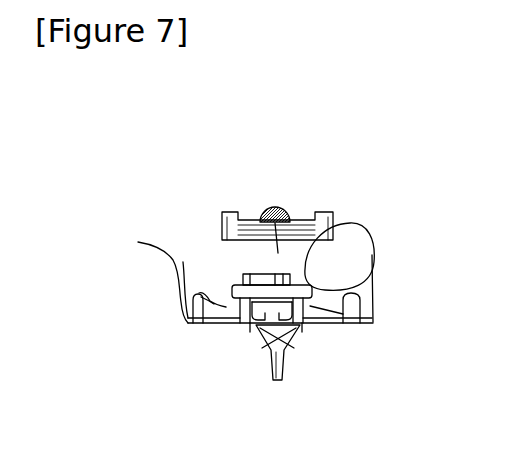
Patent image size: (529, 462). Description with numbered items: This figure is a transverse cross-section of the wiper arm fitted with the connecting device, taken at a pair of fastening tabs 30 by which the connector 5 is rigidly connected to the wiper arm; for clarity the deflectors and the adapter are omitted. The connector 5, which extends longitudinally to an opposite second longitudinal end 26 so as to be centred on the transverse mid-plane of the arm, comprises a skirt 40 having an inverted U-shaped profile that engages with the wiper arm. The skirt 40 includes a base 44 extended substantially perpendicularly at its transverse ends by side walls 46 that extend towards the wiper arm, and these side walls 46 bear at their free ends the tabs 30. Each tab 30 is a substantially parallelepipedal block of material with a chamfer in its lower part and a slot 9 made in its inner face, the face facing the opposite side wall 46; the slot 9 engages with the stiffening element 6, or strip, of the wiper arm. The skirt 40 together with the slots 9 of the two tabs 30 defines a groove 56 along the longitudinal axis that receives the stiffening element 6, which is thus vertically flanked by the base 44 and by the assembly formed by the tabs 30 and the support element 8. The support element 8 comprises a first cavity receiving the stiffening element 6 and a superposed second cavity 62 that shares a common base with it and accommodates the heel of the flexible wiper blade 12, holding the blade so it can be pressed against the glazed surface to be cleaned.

The connector 5 is at (248, 182).
The skirt 40 is at (217, 253).
The base 44 is at (288, 212).
The tab 30 is at (164, 272).
The groove 56 is at (315, 289).
The stiffening element 6 is at (343, 268).
The slot 9 is at (372, 257).
The side wall 46 is at (400, 291).
The second longitudinal end 26 is at (355, 315).
The support element 8 is at (302, 324).
The second cavity 62 is at (262, 326).
The flexible wiper blade 12 is at (276, 372).